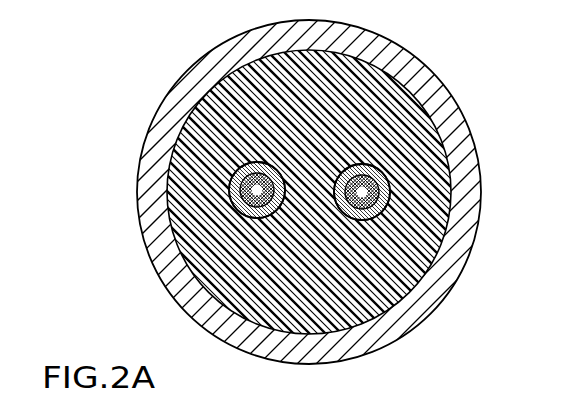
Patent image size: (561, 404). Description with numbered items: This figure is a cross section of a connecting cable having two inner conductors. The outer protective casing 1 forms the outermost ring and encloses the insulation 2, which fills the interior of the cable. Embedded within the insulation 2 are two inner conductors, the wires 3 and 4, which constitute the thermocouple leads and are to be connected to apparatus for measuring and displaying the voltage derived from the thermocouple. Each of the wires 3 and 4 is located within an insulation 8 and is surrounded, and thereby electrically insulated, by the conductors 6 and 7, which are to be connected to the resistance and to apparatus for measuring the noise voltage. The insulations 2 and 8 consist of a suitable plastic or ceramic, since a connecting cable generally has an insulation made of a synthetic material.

The outer protective casing 1 is at (451, 115).
The insulation 2 is at (242, 73).
The wire 3 is at (237, 166).
The wire 4 is at (372, 164).
The conductor 6 is at (377, 219).
The conductor 7 is at (261, 219).
The insulation 8 is at (341, 187).